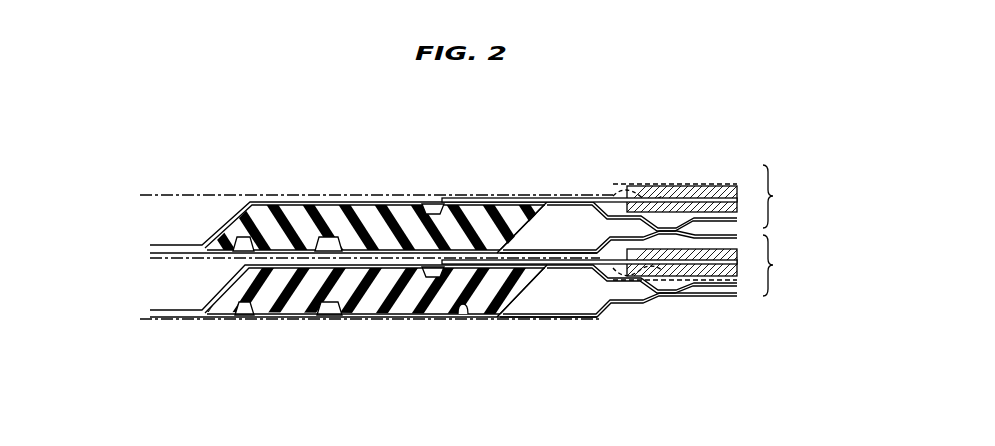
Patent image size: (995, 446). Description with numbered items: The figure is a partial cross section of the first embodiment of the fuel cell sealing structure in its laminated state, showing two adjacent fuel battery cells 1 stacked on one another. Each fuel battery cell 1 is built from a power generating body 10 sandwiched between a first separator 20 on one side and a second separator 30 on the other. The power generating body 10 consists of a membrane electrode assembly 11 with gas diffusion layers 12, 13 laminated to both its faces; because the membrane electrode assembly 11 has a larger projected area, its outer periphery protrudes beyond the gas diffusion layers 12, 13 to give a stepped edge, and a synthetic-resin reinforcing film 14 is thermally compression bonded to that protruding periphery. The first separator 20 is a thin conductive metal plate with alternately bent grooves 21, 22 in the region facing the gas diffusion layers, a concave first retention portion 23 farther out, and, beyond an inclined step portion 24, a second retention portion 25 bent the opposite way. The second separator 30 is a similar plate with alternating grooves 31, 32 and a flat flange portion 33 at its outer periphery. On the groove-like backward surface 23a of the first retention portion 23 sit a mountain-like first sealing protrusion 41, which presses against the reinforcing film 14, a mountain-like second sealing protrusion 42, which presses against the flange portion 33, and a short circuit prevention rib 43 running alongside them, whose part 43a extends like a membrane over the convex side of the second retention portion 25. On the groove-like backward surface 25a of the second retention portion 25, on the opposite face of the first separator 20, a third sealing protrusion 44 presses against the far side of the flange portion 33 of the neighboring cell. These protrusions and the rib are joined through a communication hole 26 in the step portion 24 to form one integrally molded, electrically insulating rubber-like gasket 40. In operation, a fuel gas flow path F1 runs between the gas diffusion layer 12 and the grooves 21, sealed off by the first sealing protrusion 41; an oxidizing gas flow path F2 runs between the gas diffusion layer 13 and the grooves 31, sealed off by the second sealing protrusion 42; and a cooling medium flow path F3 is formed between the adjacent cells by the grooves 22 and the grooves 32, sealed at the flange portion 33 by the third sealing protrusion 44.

The fuel battery cell 1 is at (776, 230).
The power generating body 10 is at (724, 282).
The membrane electrode assembly 11 is at (570, 198).
The gas diffusion layer 12 is at (612, 303).
The gas diffusion layer 13 is at (632, 191).
The reinforcing film 14 is at (567, 318).
The first separator 20 is at (525, 300).
The grooves 21 is at (670, 298).
The grooves 22 is at (698, 198).
The first retention portion 23 is at (445, 316).
The groove-like backward surface 23a is at (462, 310).
The step portion 24 is at (397, 205).
The second retention portion 25 is at (312, 218).
The groove-like backward surface 25a is at (258, 300).
The communication hole 26 is at (372, 215).
The second separator 30 is at (523, 246).
The grooves 31 is at (688, 198).
The grooves 32 is at (700, 296).
The flange portion 33 is at (432, 215).
The gasket 40 is at (270, 238).
The first sealing protrusion 41 is at (495, 300).
The second sealing protrusion 42 is at (410, 280).
The short circuit prevention rib 43 is at (362, 205).
The part of short circuit prevention rib 43a is at (262, 202).
The third sealing protrusion 44 is at (292, 262).
The flow path F1 is at (659, 286).
The flow path F2 is at (663, 232).
The flow path F3 is at (722, 294).